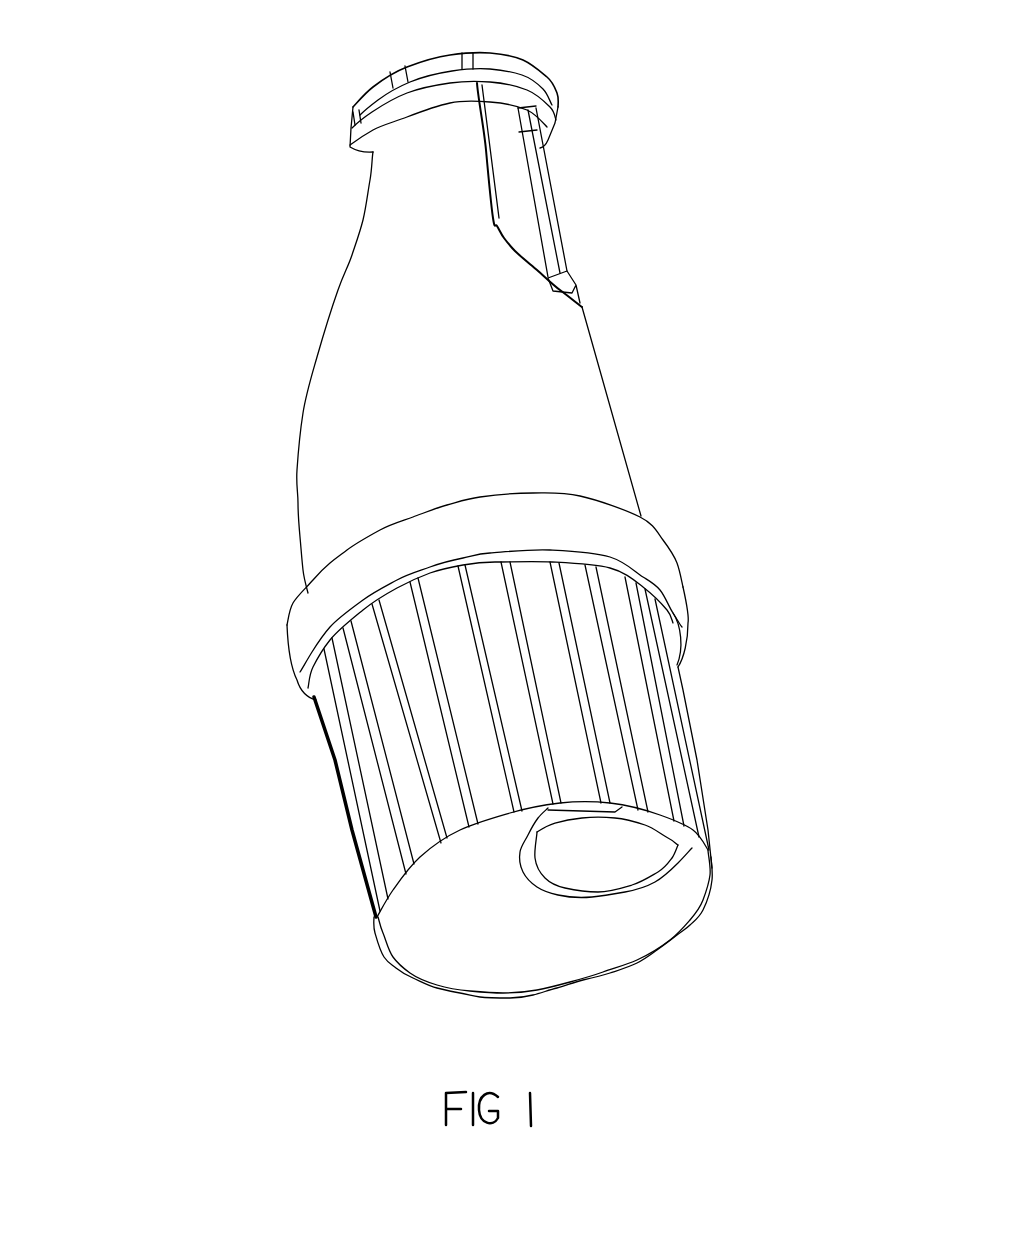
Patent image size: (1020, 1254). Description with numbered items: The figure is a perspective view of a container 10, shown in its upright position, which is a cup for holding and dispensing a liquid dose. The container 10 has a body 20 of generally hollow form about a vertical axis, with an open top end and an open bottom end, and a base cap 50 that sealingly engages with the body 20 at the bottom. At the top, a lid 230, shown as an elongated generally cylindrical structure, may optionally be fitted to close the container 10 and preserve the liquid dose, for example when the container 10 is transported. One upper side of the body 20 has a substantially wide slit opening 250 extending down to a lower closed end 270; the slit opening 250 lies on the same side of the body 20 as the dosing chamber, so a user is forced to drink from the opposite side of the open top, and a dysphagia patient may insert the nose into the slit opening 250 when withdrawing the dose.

The container 10 is at (722, 417).
The body 20 is at (357, 358).
The base cap 50 is at (335, 787).
The lid 230 is at (505, 63).
The slit opening 250 is at (543, 195).
The lower closed end 270 is at (580, 303).